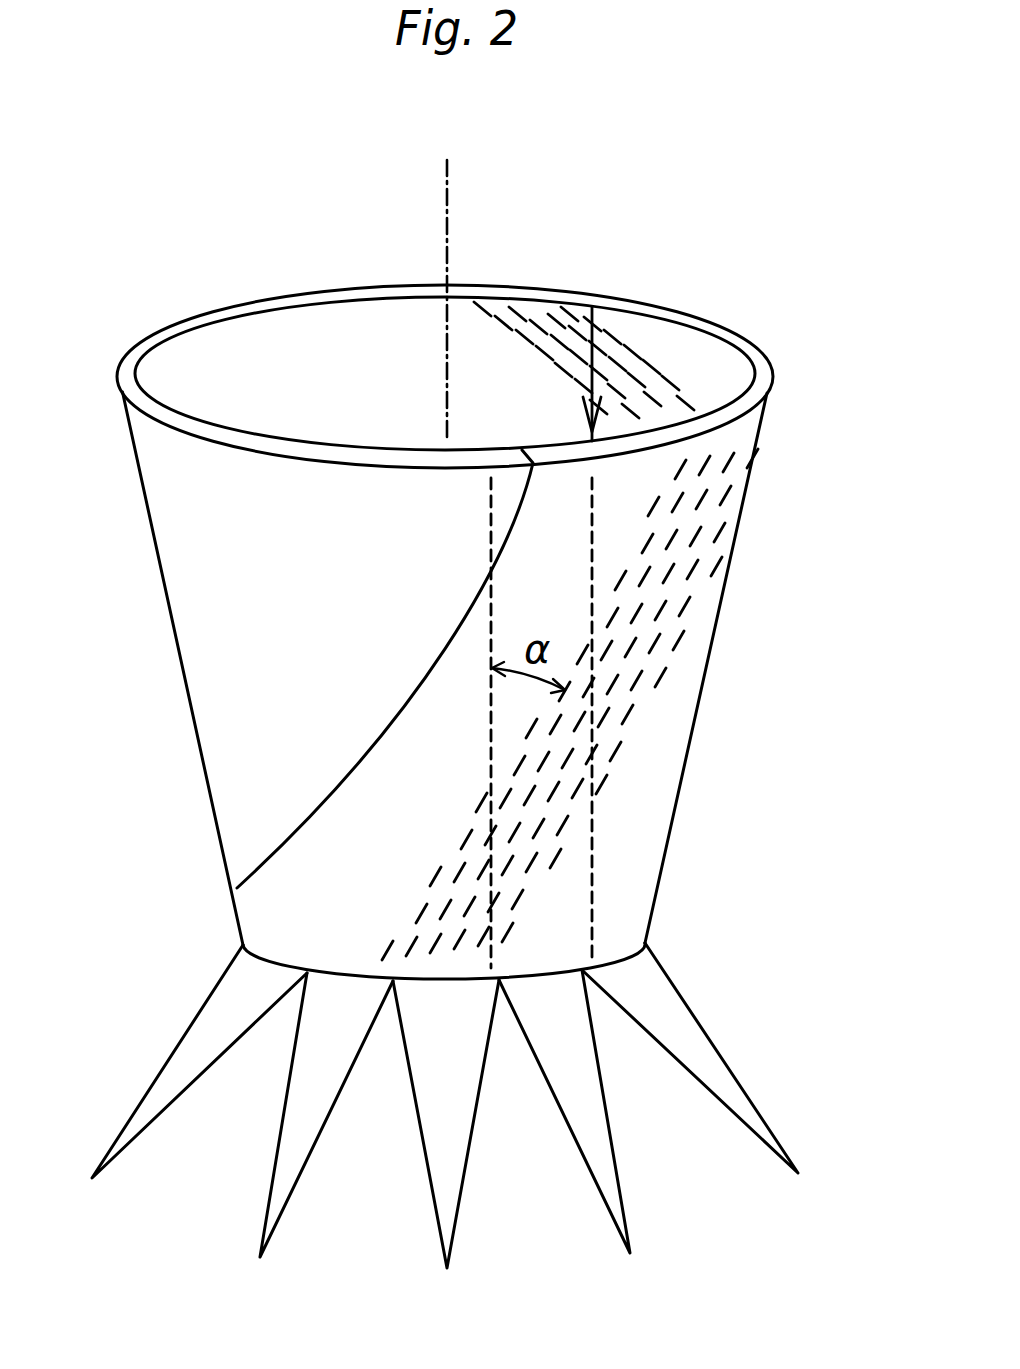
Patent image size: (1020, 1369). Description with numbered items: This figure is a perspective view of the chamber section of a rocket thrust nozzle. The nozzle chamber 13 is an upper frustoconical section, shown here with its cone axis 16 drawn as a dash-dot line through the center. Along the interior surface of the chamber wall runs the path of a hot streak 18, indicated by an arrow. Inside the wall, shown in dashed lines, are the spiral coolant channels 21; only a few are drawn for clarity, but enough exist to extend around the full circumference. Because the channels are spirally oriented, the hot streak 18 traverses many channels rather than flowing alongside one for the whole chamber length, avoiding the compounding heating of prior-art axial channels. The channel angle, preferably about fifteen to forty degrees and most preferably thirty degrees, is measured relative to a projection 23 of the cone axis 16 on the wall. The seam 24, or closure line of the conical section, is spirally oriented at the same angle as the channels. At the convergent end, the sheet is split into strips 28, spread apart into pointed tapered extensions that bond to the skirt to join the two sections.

The nozzle chamber 13 is at (701, 700).
The cone axis 16 is at (447, 238).
The hot streak 18 is at (595, 355).
The spiral coolant channels 21 is at (718, 513).
The projection of the cone axis 23 is at (495, 593).
The seam 24 is at (317, 817).
The strips 28 is at (715, 1083).